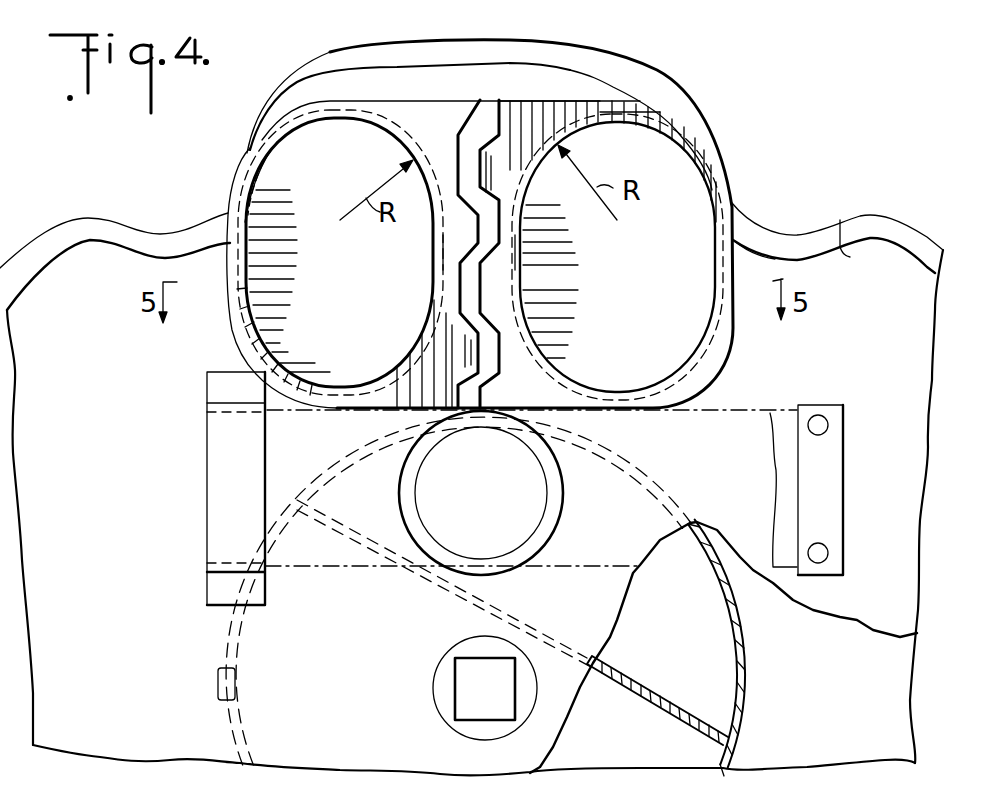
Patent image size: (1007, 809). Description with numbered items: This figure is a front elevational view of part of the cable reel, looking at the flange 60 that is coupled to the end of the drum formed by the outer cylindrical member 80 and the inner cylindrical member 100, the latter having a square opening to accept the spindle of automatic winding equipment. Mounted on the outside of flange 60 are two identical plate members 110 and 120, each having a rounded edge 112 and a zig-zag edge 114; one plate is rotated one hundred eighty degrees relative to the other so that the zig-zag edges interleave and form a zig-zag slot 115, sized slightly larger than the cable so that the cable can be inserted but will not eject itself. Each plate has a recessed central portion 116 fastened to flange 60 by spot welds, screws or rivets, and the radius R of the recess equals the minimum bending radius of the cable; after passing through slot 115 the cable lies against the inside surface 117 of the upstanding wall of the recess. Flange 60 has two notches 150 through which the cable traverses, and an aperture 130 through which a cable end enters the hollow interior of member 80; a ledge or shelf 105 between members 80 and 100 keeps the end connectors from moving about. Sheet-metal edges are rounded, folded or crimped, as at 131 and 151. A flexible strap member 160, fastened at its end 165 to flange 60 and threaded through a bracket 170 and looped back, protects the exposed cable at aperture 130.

The flange 60 is at (845, 223).
The outer cylindrical member 80 is at (743, 692).
The inner cylindrical member 100 is at (450, 688).
The ledge or shelf 105 is at (650, 657).
The plate member 110 is at (418, 110).
The rounded edge 112 is at (248, 147).
The zig-zag edge 114 is at (505, 112).
The zig-zag slot 115 is at (467, 293).
The recessed central portion 116 is at (318, 130).
The inside surface 117 is at (442, 265).
The plate member 120 is at (562, 113).
The aperture 130 is at (547, 470).
The rounded edge 131 is at (560, 523).
The notch 150 is at (183, 191).
The rounded edge 151 is at (750, 252).
The strap member 160 is at (315, 550).
The strap end 165 is at (827, 475).
The bracket 170 is at (213, 602).